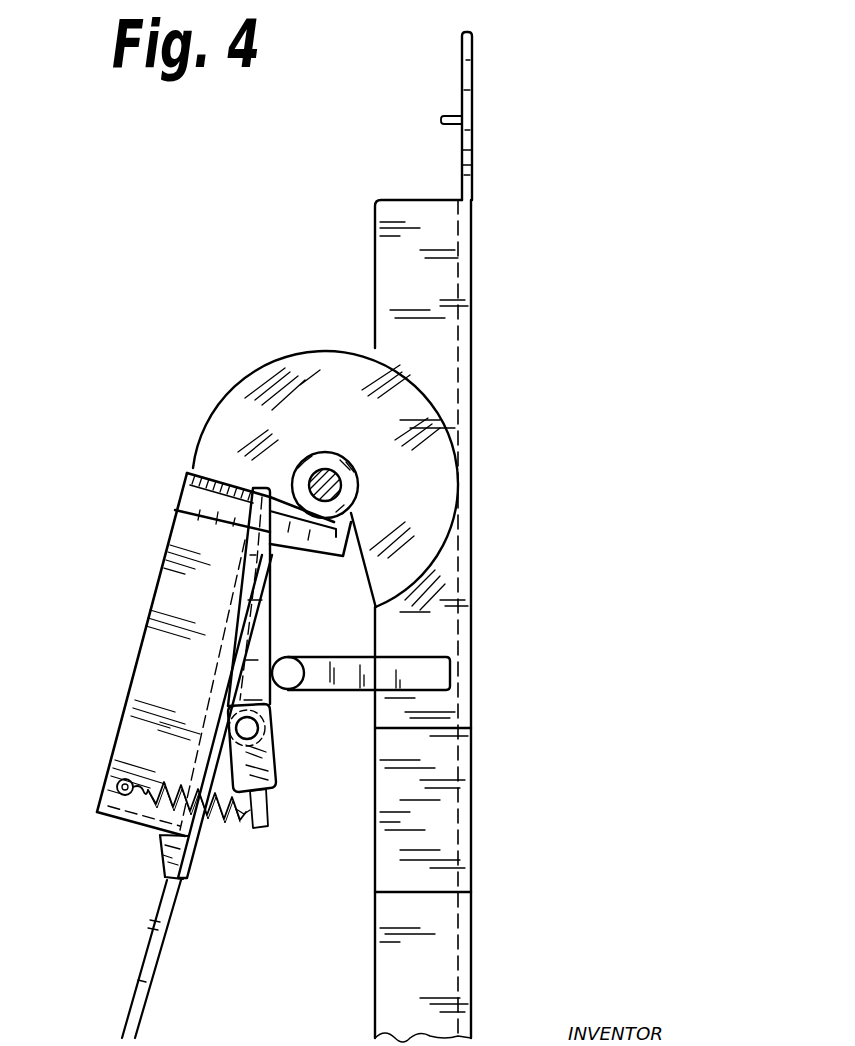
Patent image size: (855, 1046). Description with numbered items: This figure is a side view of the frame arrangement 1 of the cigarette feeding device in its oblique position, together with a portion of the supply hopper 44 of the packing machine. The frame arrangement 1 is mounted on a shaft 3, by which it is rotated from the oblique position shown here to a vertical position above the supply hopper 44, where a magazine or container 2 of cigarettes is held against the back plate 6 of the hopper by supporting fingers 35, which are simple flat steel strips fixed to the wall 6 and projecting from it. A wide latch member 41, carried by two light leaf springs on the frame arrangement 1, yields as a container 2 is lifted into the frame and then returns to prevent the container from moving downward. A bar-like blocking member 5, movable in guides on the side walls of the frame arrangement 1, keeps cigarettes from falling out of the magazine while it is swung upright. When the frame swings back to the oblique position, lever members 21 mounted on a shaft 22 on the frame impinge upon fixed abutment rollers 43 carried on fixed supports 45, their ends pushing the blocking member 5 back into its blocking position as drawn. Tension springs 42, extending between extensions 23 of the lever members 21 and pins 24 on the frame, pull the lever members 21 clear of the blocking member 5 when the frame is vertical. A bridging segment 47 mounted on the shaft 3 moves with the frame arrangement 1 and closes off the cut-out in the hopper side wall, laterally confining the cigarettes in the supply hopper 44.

The frame arrangement 1 is at (196, 828).
The container 2 is at (143, 697).
The shaft 3 is at (345, 484).
The blocking member 5 is at (185, 487).
The back plate 6 is at (525, 50).
The lever member 21 is at (253, 665).
The shaft 22 is at (258, 730).
The extension 23 is at (268, 804).
The pin 24 is at (117, 786).
The supporting finger 35 is at (449, 118).
The latch member 41 is at (160, 845).
The tension spring 42 is at (157, 787).
The abutment roller 43 is at (289, 660).
The supply hopper 44 is at (437, 258).
The fixed support 45 is at (432, 677).
The bridging segment 47 is at (233, 423).